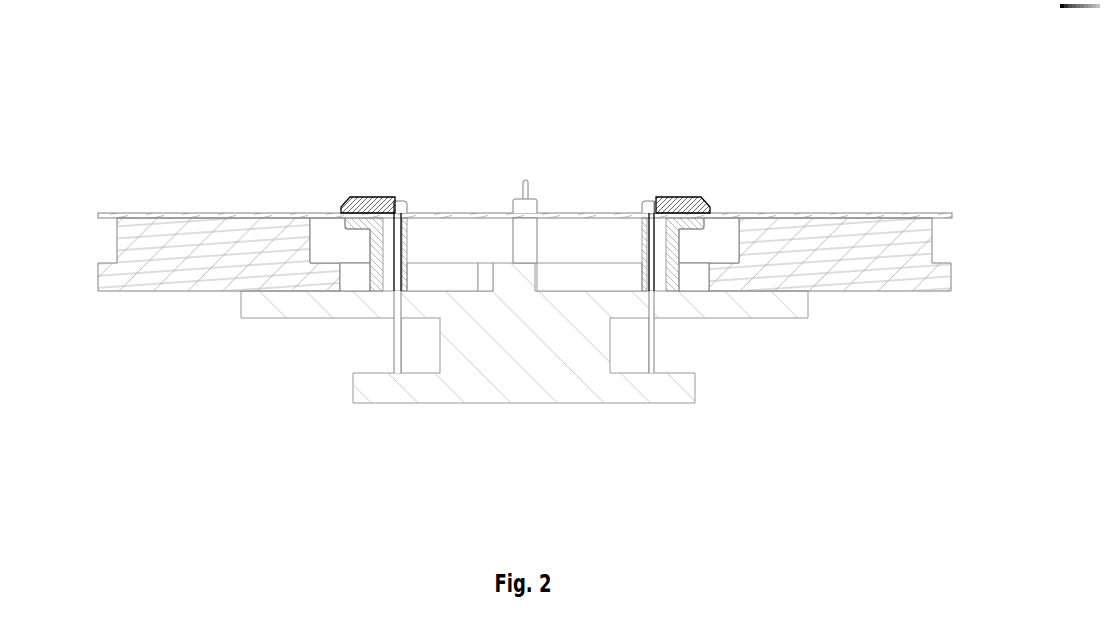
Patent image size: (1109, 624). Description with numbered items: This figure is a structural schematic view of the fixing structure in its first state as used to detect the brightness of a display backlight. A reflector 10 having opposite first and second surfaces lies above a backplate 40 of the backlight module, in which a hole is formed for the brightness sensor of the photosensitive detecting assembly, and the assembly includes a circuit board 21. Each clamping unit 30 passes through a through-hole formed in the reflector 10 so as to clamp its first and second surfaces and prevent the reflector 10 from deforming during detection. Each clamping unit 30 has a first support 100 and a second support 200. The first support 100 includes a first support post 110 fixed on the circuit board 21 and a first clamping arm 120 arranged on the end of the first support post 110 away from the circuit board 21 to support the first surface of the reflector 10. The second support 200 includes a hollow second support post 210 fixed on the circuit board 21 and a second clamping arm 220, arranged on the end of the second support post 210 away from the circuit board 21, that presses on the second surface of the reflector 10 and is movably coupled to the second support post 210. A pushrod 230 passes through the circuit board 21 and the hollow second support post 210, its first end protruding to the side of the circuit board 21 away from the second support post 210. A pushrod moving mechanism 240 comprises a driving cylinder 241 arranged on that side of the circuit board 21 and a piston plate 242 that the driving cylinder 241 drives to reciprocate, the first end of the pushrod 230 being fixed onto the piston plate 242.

The reflector 10 is at (584, 213).
The circuit board 21 is at (272, 309).
The clamping unit 30 is at (378, 176).
The backplate 40 is at (127, 276).
The first support 100 is at (447, 213).
The first support post 110 is at (374, 268).
The first clamping arm 120 is at (362, 224).
The second support 200 is at (525, 194).
The second support post 210 is at (407, 270).
The second clamping arm 220 is at (400, 195).
The pushrod 230 is at (370, 206).
The pushrod moving mechanism 240 is at (524, 426).
The driving cylinder 241 is at (592, 350).
The piston plate 242 is at (655, 483).